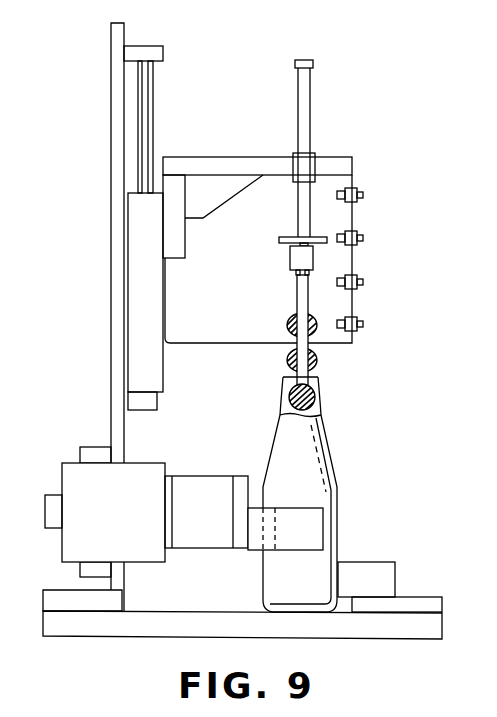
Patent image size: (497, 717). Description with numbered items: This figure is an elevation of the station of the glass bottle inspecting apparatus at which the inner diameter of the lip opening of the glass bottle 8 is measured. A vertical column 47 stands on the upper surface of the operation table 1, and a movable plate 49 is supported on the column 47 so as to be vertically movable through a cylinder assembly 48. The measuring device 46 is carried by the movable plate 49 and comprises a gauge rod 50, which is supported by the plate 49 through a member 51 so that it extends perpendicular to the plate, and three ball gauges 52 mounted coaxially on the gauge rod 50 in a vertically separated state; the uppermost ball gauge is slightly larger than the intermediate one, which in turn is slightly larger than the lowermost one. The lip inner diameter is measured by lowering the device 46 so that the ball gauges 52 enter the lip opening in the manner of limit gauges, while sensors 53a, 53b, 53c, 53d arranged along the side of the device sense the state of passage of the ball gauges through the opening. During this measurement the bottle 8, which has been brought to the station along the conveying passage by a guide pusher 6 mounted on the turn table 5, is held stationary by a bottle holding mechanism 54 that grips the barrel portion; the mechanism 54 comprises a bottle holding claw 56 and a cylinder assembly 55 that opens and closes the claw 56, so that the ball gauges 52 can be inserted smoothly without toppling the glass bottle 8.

The operation table 1 is at (178, 620).
The turn table 5 is at (411, 597).
The guide pusher 6 is at (362, 565).
The glass bottle 8 is at (339, 478).
The device for measuring the inner diameter of the lip opening 46 is at (284, 209).
The vertical column 47 is at (110, 250).
The cylinder assembly 48 is at (157, 365).
The movable plate 49 is at (217, 160).
The gauge rod 50 is at (285, 238).
The member 51 is at (290, 257).
The ball gauges 52 is at (288, 358).
The sensor 53a is at (359, 192).
The sensor 53b is at (359, 235).
The sensor 53c is at (359, 279).
The sensor 53d is at (359, 321).
The bottle holding mechanism 54 is at (180, 489).
The cylinder assembly 55 is at (141, 476).
The bottle holding claw 56 is at (290, 546).